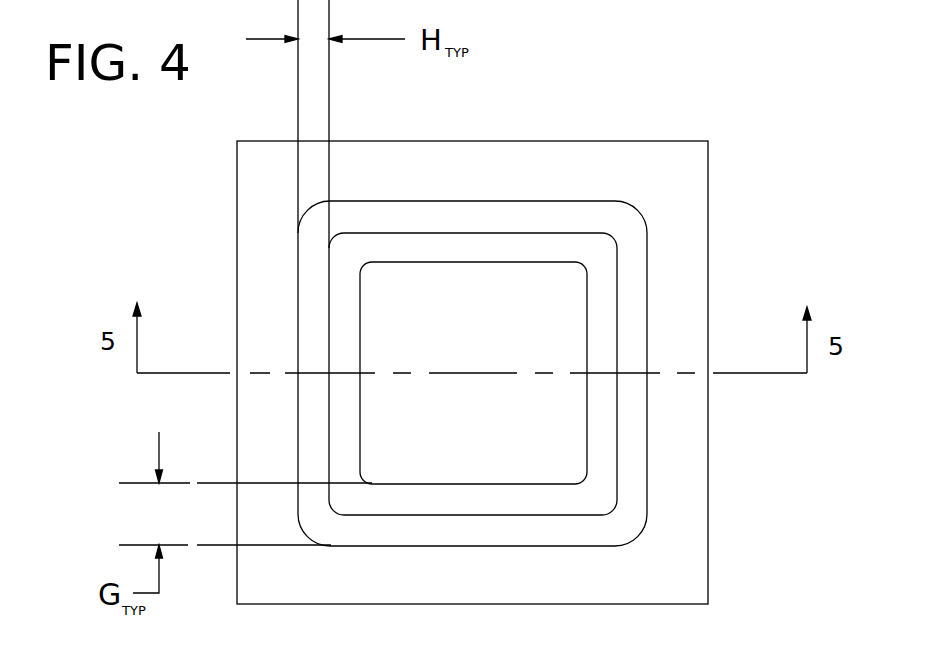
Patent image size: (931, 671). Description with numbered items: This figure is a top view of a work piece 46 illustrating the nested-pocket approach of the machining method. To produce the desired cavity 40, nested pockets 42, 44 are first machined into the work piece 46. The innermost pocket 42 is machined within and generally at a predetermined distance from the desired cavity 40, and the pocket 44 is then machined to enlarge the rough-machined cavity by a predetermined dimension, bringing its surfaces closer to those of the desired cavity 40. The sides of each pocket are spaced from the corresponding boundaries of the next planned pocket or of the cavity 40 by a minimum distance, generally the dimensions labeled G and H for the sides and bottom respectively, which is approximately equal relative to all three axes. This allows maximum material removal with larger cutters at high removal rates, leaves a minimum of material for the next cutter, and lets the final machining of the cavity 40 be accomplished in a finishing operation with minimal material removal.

The cavity 40 is at (647, 272).
The pocket 42 is at (584, 468).
The pocket 44 is at (583, 233).
The work piece 46 is at (688, 604).